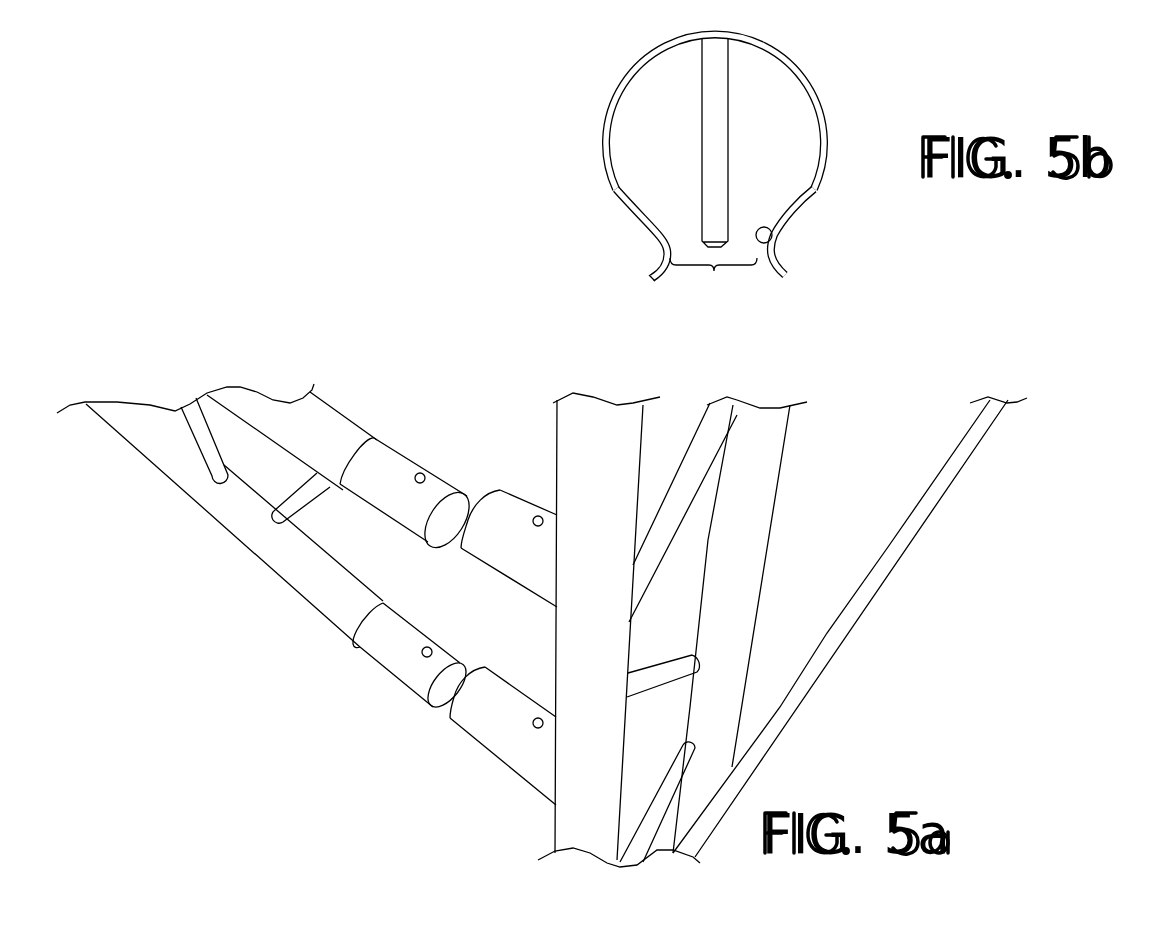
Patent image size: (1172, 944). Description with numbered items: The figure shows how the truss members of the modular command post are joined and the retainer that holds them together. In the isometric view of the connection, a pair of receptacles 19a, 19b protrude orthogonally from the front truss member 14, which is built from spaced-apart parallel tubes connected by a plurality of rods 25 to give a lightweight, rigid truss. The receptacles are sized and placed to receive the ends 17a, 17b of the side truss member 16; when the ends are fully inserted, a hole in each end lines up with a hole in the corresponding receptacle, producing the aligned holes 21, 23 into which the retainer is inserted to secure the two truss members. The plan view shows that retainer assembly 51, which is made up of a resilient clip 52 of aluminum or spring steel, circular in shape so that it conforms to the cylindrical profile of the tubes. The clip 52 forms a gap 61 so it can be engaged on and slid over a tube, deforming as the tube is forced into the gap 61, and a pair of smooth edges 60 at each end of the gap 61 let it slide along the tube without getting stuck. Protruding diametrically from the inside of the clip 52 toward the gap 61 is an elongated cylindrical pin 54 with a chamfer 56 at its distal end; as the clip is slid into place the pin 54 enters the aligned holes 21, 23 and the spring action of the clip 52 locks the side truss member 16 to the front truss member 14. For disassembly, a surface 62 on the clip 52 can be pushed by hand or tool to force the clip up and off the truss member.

In FIG. 5A, the front truss member 14 is at (778, 483).
In FIG. 5A, the side truss member 16 is at (280, 583).
In FIG. 5A, the end 17a is at (397, 460).
In FIG. 5A, the end 17b is at (367, 587).
In FIG. 5A, the receptacle 19a is at (520, 494).
In FIG. 5A, the receptacle 19b is at (503, 678).
In FIG. 5A, the aligned hole 21 is at (417, 655).
In FIG. 5A, the aligned hole 23 is at (533, 727).
In FIG. 5A, the rod 25 is at (671, 553).
In FIG. 5B, the retainer assembly 51 is at (739, 189).
In FIG. 5B, the resilient clip 52 is at (809, 113).
In FIG. 5B, the elongated cylindrical pin 54 is at (720, 100).
In FIG. 5B, the chamfer 56 is at (704, 241).
In FIG. 5B, the smooth edge 60 is at (778, 224).
In FIG. 5B, the gap 61 is at (713, 283).
In FIG. 5B, the surface 62 is at (654, 280).